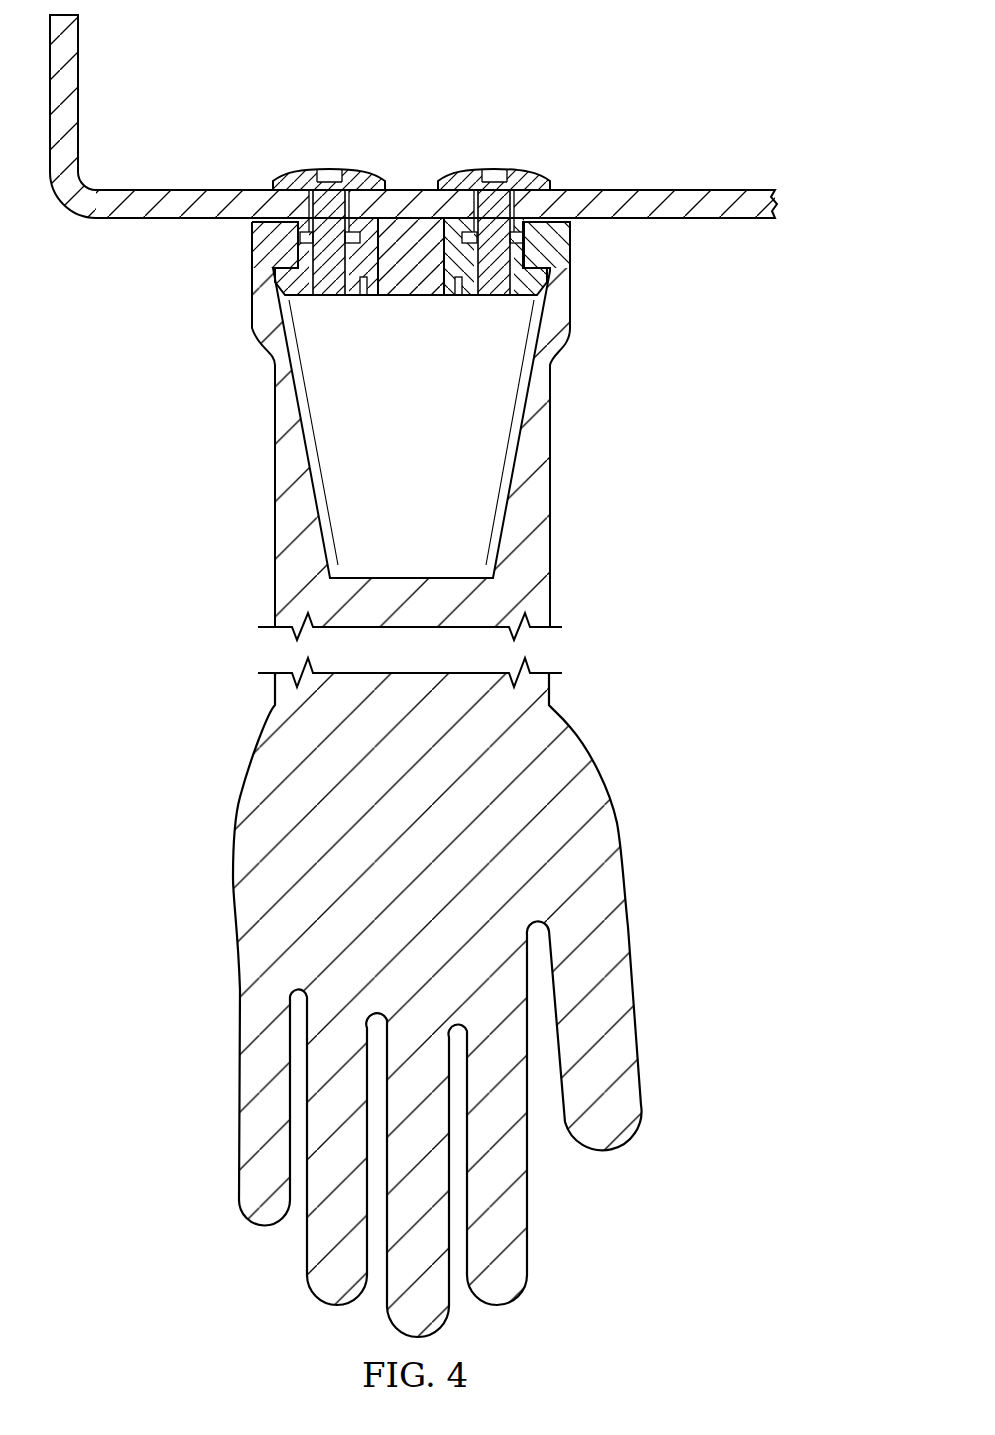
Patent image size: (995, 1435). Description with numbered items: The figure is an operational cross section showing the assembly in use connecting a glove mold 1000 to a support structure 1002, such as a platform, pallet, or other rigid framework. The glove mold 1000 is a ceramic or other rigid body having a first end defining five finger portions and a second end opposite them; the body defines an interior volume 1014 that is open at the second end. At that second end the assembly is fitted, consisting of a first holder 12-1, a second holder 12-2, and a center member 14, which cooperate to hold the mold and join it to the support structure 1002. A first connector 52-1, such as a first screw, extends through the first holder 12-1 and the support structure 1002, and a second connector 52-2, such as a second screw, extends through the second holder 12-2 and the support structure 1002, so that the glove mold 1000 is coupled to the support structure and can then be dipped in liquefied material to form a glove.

The glove mold 1000 is at (628, 934).
The support structure 1002 is at (195, 190).
The interior volume 1014 is at (495, 393).
The first holder 12-1 is at (470, 299).
The second holder 12-2 is at (352, 299).
The center member 14 is at (405, 299).
The first connector 52-1 is at (523, 169).
The second connector 52-2 is at (313, 169).